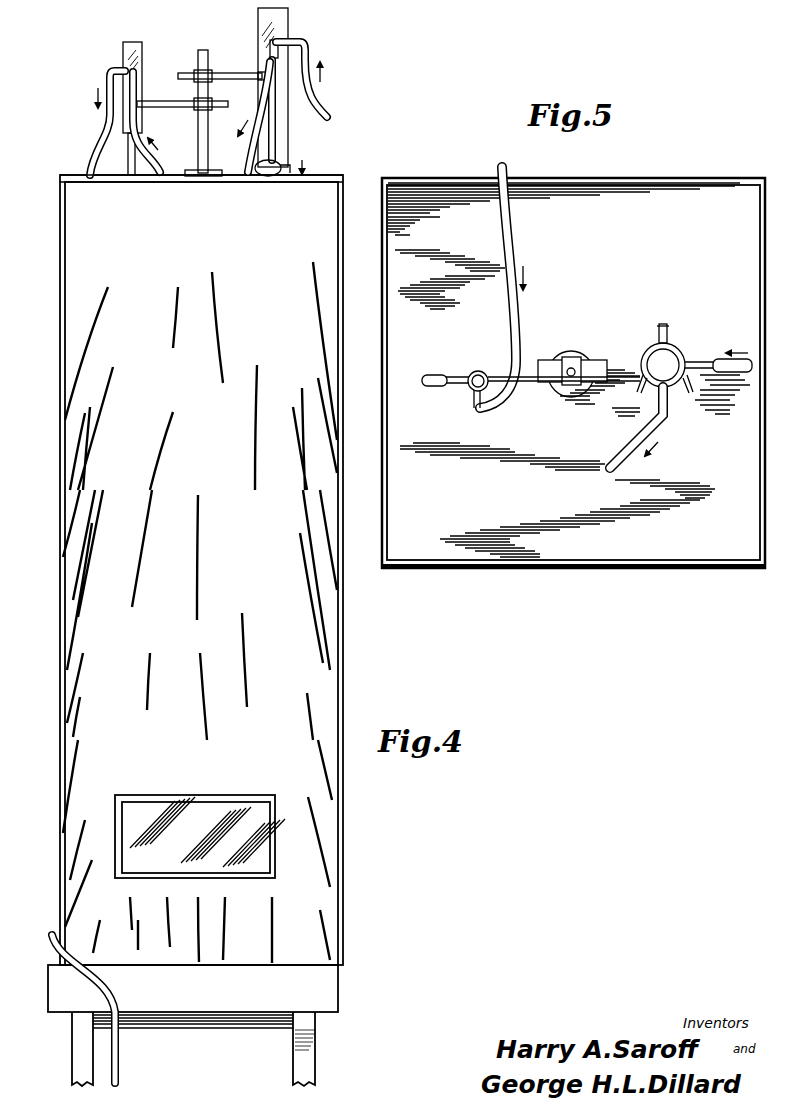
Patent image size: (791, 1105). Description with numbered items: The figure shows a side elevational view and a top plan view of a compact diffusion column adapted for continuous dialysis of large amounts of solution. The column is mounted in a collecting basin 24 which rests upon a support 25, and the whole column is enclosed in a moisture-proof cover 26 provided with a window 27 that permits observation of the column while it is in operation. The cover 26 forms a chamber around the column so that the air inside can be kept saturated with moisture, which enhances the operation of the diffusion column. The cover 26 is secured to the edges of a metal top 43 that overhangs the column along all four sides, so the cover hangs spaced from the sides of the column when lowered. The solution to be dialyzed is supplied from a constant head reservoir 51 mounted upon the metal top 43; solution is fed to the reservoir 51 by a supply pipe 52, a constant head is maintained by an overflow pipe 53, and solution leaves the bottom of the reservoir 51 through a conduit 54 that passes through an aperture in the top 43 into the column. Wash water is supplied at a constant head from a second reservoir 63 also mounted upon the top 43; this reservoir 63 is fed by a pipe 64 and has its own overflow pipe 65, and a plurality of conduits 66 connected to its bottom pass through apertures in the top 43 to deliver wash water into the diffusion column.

In FIG. 4, the collecting basin 24 is at (340, 991).
In FIG. 4, the support 25 is at (318, 1055).
In FIG. 4, the moisture-proof cover 26 is at (330, 848).
In FIG. 4, the window 27 is at (196, 780).
In FIG. 5, the metal top 43 is at (565, 555).
In FIG. 4, the constant head reservoir 51 is at (123, 48).
In FIG. 5, the constant head reservoir 51 is at (473, 371).
In FIG. 4, the supply pipe 52 is at (162, 170).
In FIG. 5, the supply pipe 52 is at (520, 226).
In FIG. 4, the overflow pipe 53 is at (108, 72).
In FIG. 5, the overflow pipe 53 is at (432, 388).
In FIG. 4, the conduit 54 is at (142, 179).
In FIG. 4, the reservoir 63 is at (290, 32).
In FIG. 4, the pipe 64 is at (325, 108).
In FIG. 5, the pipe 64 is at (745, 372).
In FIG. 4, the overflow pipe 65 is at (276, 126).
In FIG. 5, the overflow pipe 65 is at (632, 442).
In FIG. 4, the conduits 66 is at (270, 178).
In FIG. 5, the conduits 66 is at (662, 325).